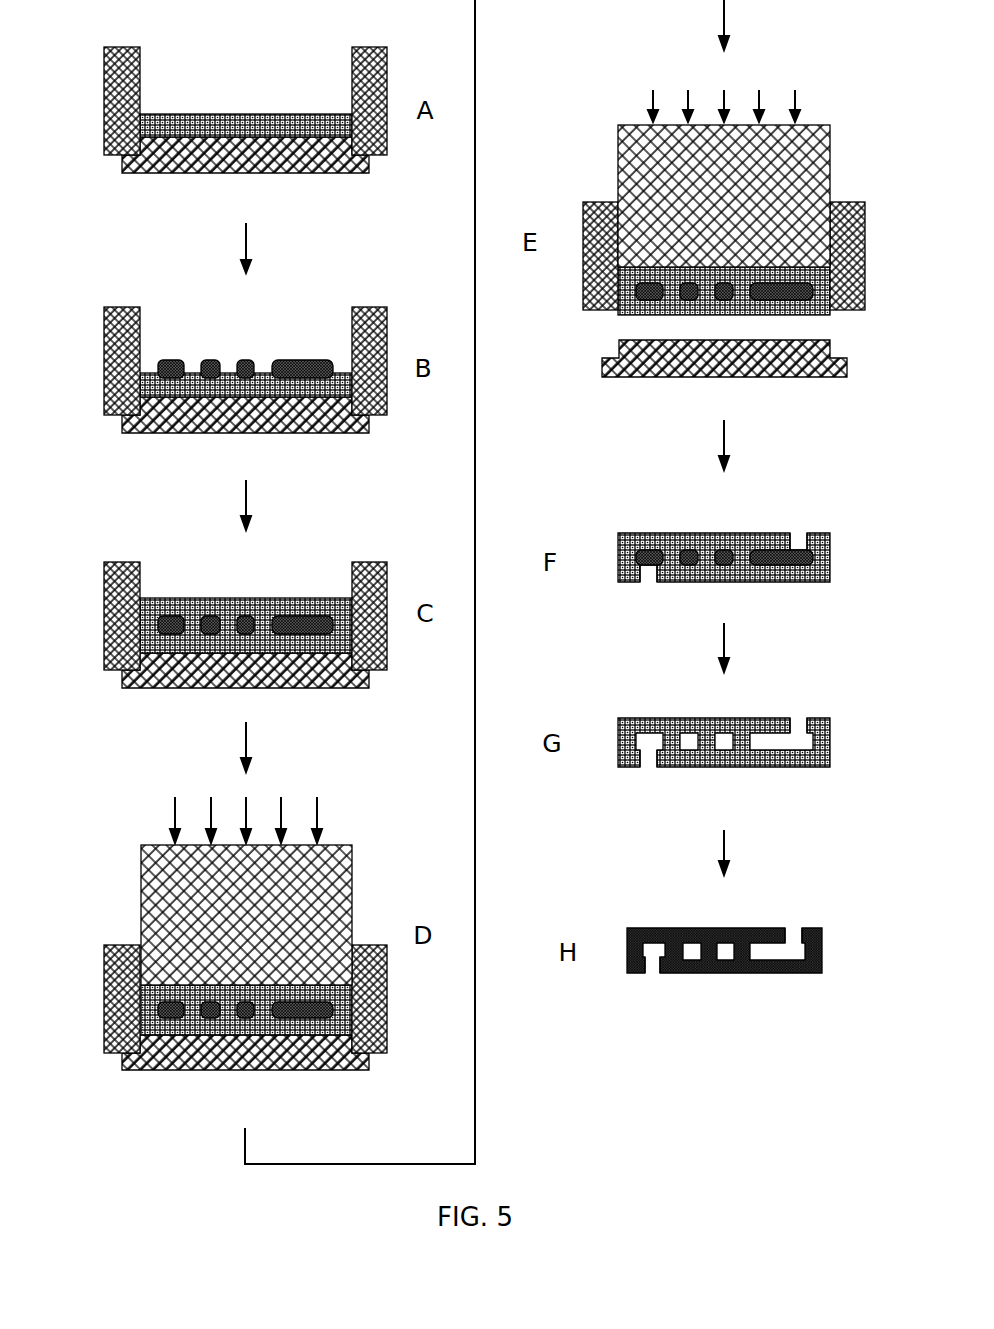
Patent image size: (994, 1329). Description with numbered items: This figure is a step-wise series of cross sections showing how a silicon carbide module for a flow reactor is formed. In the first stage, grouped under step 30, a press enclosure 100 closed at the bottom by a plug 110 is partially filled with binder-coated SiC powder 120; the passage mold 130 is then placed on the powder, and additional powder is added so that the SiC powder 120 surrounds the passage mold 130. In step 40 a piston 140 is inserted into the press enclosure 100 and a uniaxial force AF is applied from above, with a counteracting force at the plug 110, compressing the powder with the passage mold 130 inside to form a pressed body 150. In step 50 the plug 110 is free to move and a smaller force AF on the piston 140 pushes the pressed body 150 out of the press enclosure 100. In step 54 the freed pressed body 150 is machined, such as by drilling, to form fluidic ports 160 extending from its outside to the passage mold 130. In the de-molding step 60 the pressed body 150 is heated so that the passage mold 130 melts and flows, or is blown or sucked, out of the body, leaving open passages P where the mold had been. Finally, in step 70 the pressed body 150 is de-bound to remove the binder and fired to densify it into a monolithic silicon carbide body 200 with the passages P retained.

The press enclosure 100 is at (130, 73).
The plug 110 is at (175, 165).
The binder-coated SiC powder 120 is at (228, 118).
The passage mold 130 is at (247, 365).
The piston 140 is at (485, 555).
The pressed body 150 is at (213, 1025).
The fluidic ports 160 is at (804, 522).
The monolithic silicon carbide body 200 is at (663, 935).
The step of filling the press enclosure 30 is at (71, 27).
The step of compressing the SiC powder 40 is at (71, 793).
The step of removing the pressed body 50 is at (885, 102).
The step of forming fluidic ports 54 is at (866, 492).
The de-molding step 60 is at (868, 685).
The step of de-binding and firing 70 is at (856, 893).
The uniaxial force AF is at (318, 810).
The passages P is at (806, 700).